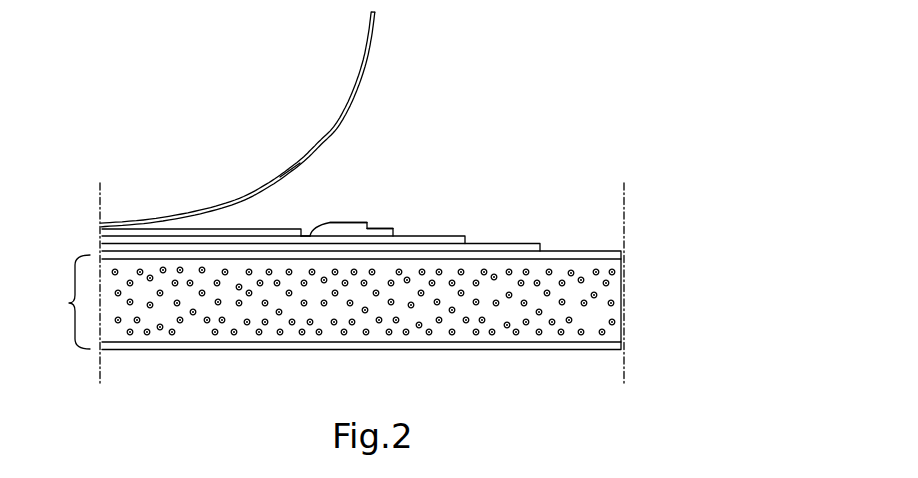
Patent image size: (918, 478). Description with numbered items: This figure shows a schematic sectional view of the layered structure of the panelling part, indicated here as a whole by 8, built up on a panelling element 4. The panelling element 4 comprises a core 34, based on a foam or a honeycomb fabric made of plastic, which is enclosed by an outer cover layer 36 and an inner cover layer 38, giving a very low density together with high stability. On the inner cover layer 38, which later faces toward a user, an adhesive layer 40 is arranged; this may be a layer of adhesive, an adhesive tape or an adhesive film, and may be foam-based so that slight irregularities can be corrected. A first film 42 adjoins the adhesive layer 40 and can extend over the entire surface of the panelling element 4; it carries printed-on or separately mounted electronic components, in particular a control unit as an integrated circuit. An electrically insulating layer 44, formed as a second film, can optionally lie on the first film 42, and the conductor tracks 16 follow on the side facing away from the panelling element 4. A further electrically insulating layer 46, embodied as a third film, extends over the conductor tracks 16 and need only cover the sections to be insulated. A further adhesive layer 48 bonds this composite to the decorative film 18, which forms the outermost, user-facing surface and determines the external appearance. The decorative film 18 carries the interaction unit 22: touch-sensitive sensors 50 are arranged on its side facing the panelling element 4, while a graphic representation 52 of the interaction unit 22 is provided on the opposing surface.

The panelling element 4 is at (70, 302).
The sensor device 8 is at (128, 176).
The conductor tracks 16 is at (397, 218).
The decorative film 18 is at (367, 50).
The interaction unit 22 is at (287, 107).
The core 34 is at (202, 310).
The outer cover layer 36 is at (567, 351).
The inner cover layer 38 is at (623, 257).
The adhesive layer 40 is at (542, 248).
The first film 42 is at (466, 237).
The electrically insulating layer 44 is at (395, 232).
The electrically insulating layer 46 is at (365, 216).
The further adhesive layer 48 is at (291, 224).
The touch-sensitive sensors 50 is at (298, 182).
The graphic representation 52 is at (284, 165).